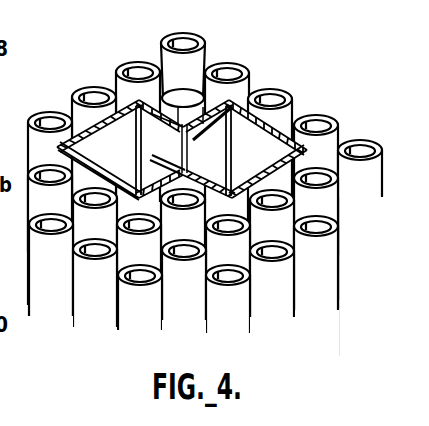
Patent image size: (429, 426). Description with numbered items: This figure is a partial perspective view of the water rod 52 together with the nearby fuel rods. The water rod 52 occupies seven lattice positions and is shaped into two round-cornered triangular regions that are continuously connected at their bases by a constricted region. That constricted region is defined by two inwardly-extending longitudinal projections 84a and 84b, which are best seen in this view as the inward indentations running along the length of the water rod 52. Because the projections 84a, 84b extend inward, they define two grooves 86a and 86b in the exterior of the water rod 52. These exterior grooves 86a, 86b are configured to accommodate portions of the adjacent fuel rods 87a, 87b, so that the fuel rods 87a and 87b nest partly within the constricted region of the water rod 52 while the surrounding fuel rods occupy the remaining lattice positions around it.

The water rod 52 is at (293, 128).
The inwardly-extending longitudinal projection 84a is at (247, 90).
The inwardly-extending longitudinal projection 84b is at (195, 168).
The groove 86a is at (160, 43).
The groove 86b is at (158, 238).
The fuel rod 87a is at (212, 56).
The fuel rod 87b is at (294, 255).